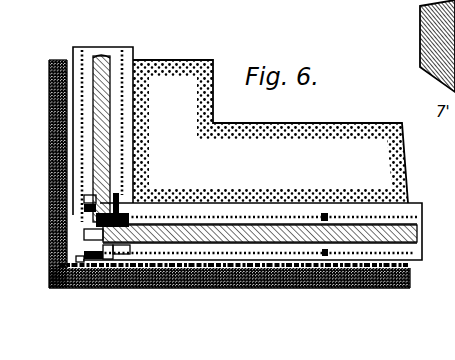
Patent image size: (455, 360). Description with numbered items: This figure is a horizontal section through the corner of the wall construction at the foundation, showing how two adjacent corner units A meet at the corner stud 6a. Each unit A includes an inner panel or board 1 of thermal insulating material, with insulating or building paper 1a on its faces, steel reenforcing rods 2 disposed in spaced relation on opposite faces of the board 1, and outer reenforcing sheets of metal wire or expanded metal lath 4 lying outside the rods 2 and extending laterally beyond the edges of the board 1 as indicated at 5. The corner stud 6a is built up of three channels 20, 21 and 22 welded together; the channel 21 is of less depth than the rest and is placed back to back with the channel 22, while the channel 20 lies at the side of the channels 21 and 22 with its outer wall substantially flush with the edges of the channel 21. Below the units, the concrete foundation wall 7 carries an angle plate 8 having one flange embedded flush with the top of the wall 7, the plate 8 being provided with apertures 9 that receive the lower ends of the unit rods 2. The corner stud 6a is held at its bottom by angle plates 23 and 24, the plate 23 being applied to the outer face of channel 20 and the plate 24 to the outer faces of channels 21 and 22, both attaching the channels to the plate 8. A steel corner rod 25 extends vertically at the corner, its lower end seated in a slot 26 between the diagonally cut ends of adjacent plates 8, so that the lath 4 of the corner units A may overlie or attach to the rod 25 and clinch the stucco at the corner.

The inner panel or board 1 is at (100, 57).
The insulating or building paper 1a is at (112, 57).
The steel reenforcing rods 2 is at (325, 216).
The reenforcing sheets of metal wire or expanded metal lath 4 is at (407, 213).
The laterally extending lath portion 5 is at (127, 221).
The corner stud 6a is at (100, 228).
The concrete foundation wall 7 is at (190, 61).
The angle plate 8 is at (133, 55).
The apertures 9 is at (325, 253).
The channel 20 is at (92, 207).
The channel 21 is at (100, 235).
The channel 22 is at (123, 252).
The angle plate 23 is at (90, 200).
The angle plate 24 is at (108, 262).
The steel corner rod 25 is at (81, 262).
The slot 26 is at (95, 257).
The unit A is at (365, 238).